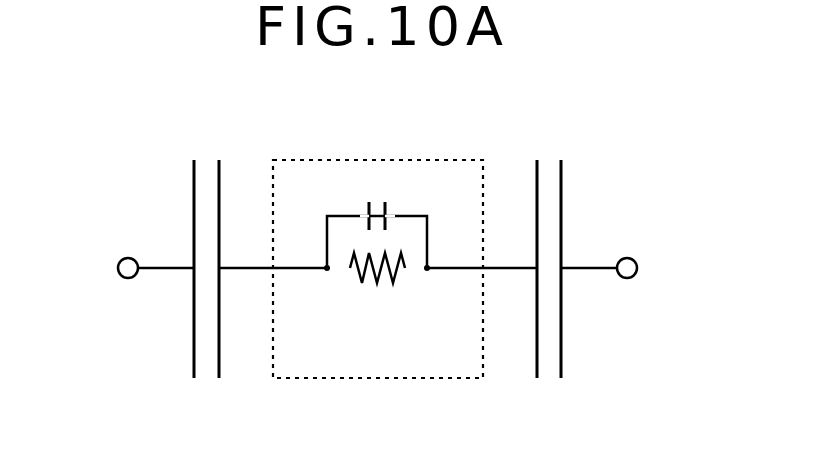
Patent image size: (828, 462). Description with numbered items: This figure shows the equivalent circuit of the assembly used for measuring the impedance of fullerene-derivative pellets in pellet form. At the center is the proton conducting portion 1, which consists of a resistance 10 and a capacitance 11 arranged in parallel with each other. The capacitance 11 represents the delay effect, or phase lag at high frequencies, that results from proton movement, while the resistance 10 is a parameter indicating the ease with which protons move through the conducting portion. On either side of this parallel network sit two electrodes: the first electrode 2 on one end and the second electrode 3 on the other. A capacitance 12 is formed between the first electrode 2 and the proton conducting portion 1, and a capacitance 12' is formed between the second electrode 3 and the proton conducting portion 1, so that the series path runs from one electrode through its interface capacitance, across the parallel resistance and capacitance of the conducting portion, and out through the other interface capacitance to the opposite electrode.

The proton conducting portion 1 is at (445, 158).
The first electrode 2 is at (627, 257).
The second electrode 3 is at (128, 257).
The resistance 10 is at (397, 275).
The capacitance 11 is at (366, 212).
The capacitance 12 is at (549, 289).
The capacitance 12' is at (210, 289).